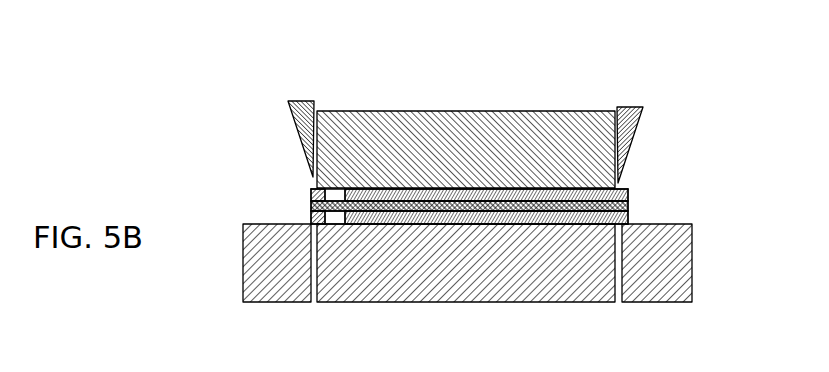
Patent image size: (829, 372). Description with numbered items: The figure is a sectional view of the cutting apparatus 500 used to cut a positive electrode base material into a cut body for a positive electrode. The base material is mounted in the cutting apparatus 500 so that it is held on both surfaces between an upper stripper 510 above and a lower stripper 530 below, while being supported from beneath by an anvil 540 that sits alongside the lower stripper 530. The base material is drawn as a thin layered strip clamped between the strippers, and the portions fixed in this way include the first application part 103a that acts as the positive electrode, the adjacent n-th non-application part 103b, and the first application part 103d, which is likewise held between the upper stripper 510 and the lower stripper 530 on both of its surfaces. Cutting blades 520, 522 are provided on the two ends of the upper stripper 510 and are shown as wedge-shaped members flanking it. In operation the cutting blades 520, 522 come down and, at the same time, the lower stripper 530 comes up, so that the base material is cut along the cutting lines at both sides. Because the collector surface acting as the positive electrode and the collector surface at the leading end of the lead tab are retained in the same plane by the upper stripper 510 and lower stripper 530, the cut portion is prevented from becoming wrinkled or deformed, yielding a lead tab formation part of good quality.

The cutting apparatus 500 is at (221, 78).
The upper stripper 510 is at (492, 143).
The cutting blade 520 is at (300, 100).
The cutting blade 522 is at (622, 107).
The first application part 103a is at (400, 197).
The n-th non-application part 103b is at (342, 200).
The first application part 103d is at (310, 192).
The lower stripper 530 is at (468, 280).
The anvil 540 is at (273, 295).